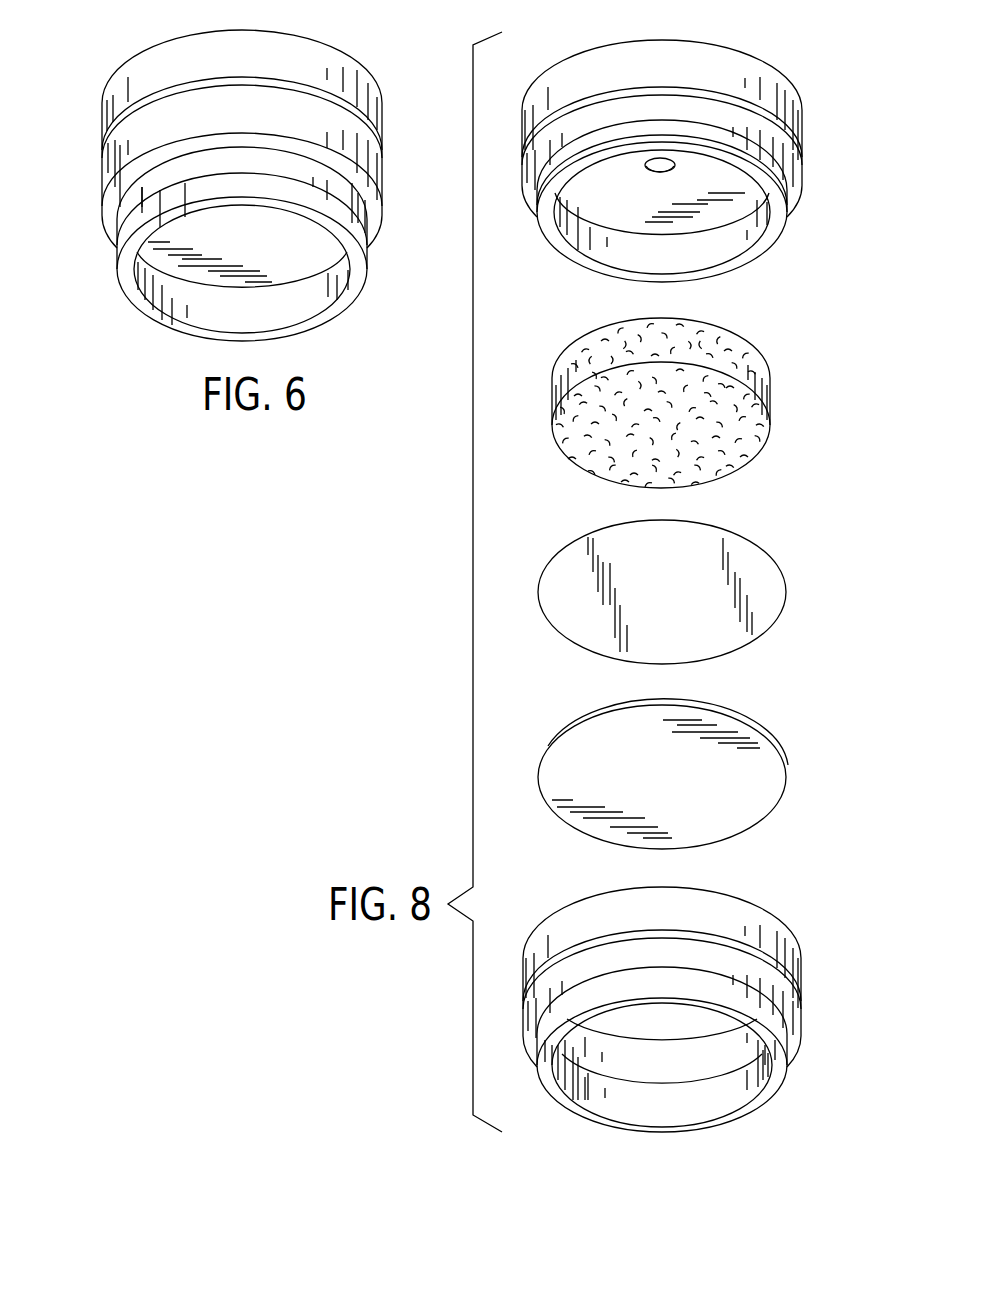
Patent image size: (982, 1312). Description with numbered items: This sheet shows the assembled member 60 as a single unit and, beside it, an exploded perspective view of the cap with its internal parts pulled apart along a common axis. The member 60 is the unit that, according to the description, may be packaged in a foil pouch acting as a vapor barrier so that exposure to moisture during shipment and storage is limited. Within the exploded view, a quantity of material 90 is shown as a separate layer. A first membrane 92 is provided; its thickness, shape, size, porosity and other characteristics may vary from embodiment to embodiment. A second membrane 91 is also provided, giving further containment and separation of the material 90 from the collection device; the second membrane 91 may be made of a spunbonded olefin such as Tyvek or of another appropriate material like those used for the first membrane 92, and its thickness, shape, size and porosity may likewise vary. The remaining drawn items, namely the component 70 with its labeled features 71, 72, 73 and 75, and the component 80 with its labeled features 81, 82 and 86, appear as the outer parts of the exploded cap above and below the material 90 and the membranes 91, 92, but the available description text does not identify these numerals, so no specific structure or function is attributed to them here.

In FIG. 6, the member 60 is at (80, 90).
In FIG. 8, the cap 70 is at (750, 44).
In FIG. 8, the end wall 71 is at (607, 43).
In FIG. 8, the side wall 72 is at (773, 229).
In FIG. 8, the aperture 73 is at (590, 196).
In FIG. 8, the inner surface 75 is at (707, 243).
In FIG. 8, the base ring 80 is at (813, 970).
In FIG. 8, the end wall 81 is at (562, 912).
In FIG. 8, the side wall 82 is at (763, 1093).
In FIG. 8, the inner surface 86 is at (687, 1098).
In FIG. 8, the material 90 is at (791, 377).
In FIG. 8, the second membrane 91 is at (796, 572).
In FIG. 8, the first membrane 92 is at (796, 765).